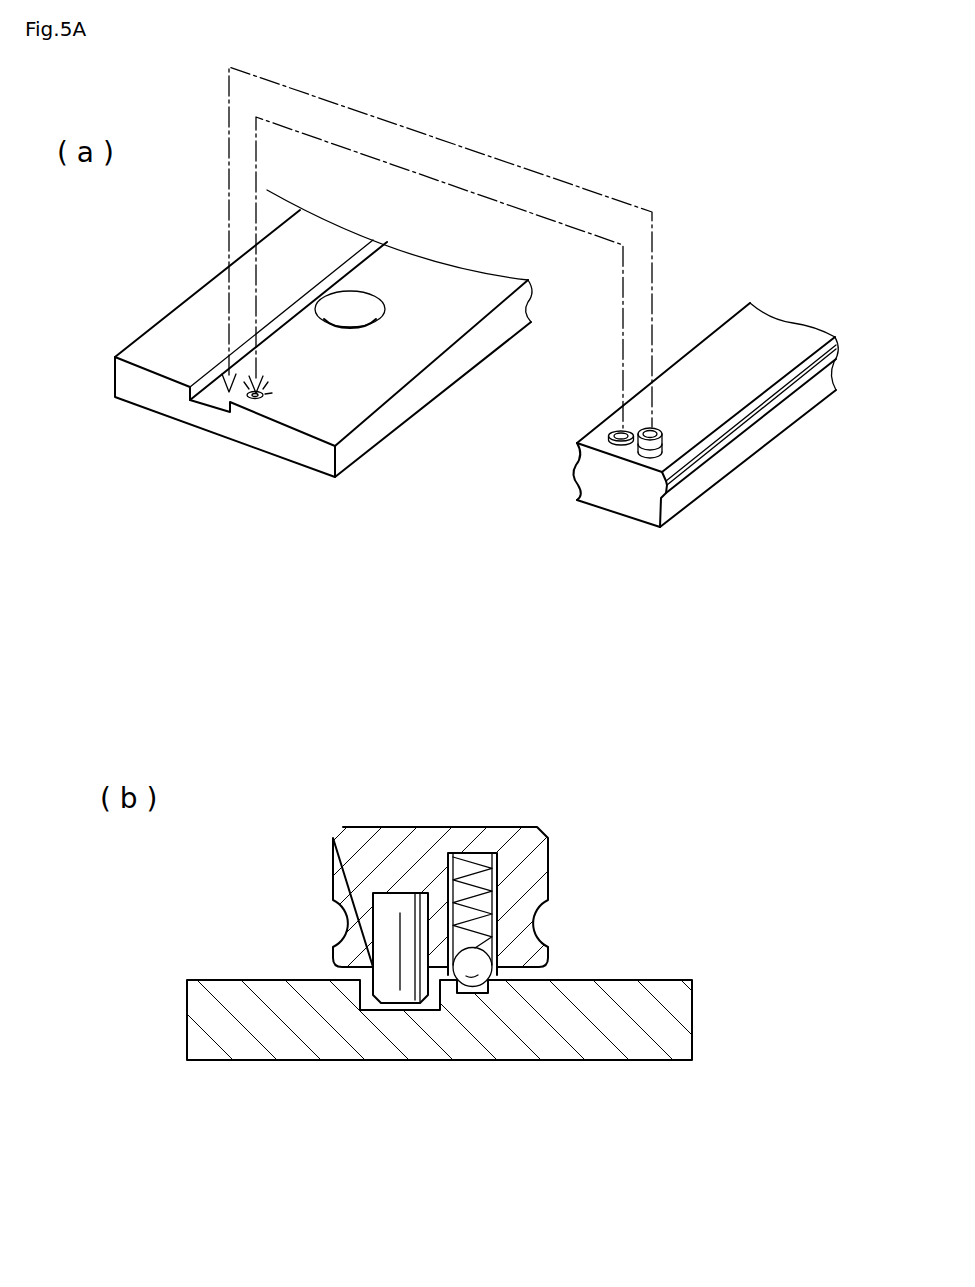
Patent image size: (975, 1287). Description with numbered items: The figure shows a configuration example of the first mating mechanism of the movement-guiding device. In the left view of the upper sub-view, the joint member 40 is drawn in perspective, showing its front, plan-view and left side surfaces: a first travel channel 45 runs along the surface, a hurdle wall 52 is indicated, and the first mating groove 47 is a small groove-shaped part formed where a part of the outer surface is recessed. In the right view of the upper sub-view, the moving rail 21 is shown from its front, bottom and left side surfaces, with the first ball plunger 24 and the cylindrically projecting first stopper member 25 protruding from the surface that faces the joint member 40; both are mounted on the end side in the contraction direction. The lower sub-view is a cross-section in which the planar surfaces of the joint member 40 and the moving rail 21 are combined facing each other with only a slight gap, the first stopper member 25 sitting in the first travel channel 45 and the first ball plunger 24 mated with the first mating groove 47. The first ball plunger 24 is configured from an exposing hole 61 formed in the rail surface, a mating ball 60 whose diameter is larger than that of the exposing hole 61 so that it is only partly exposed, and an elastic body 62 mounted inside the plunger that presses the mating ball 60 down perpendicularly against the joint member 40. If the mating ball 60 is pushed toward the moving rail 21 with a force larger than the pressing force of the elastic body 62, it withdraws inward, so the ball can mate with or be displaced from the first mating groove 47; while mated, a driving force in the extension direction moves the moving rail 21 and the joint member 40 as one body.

The moving rail 21 is at (703, 293).
The first ball plunger 24 is at (620, 430).
The first stopper member 25 is at (663, 430).
The joint member 40 is at (383, 455).
The first travel channel 45 is at (220, 387).
The first mating groove 47 is at (252, 403).
The hurdle wall 52 is at (273, 388).
The mating ball 60 is at (535, 946).
The exposing hole 61 is at (500, 972).
The elastic body 62 is at (474, 872).